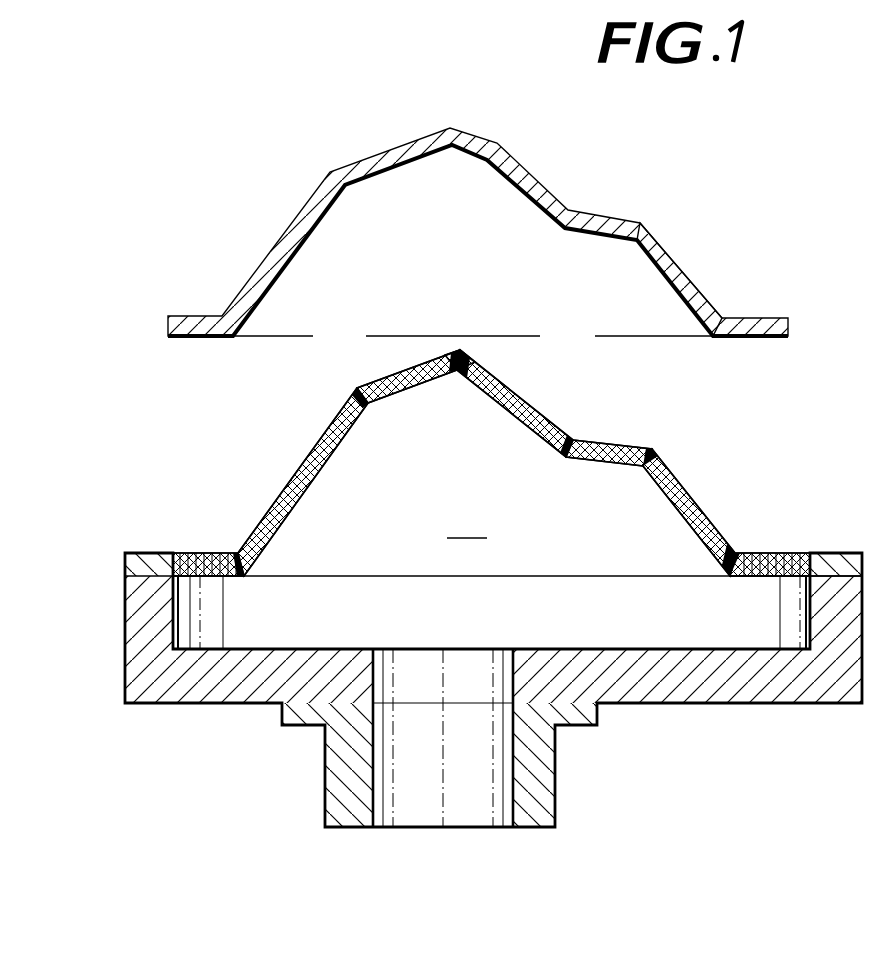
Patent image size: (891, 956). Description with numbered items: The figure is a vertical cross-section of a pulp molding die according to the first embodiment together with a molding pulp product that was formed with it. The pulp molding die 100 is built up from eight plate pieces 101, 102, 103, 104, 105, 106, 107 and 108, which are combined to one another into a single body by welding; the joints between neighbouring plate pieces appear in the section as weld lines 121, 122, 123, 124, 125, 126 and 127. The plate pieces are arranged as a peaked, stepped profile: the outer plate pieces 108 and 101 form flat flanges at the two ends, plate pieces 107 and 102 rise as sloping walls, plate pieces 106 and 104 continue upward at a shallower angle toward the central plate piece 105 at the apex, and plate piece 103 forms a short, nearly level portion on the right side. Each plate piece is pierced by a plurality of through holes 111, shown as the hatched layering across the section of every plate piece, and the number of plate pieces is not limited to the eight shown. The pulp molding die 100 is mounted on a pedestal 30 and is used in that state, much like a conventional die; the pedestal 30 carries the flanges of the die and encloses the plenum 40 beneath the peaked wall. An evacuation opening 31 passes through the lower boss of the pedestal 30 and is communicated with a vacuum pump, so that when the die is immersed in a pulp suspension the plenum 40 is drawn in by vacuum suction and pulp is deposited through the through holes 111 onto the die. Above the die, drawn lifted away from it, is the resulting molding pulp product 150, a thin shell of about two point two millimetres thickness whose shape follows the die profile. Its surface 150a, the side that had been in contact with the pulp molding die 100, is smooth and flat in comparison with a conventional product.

The pedestal 30 is at (128, 677).
The evacuation opening 31 is at (374, 790).
The plenum 40 is at (487, 473).
The pulp molding die 100 is at (138, 516).
The plate piece 101 is at (787, 548).
The plate piece 102 is at (664, 466).
The plate piece 103 is at (604, 443).
The plate piece 104 is at (530, 382).
The plate piece 105 is at (483, 345).
The plate piece 106 is at (393, 375).
The plate piece 107 is at (302, 457).
The plate piece 108 is at (188, 554).
The through holes 111 is at (407, 396).
The weld line 121 is at (733, 548).
The weld line 122 is at (650, 452).
The weld line 123 is at (570, 460).
The weld line 124 is at (505, 381).
The weld line 125 is at (455, 352).
The weld line 126 is at (357, 390).
The weld line 127 is at (236, 552).
The molding pulp product 150 is at (368, 158).
The surface of the molding pulp product 150a is at (654, 283).